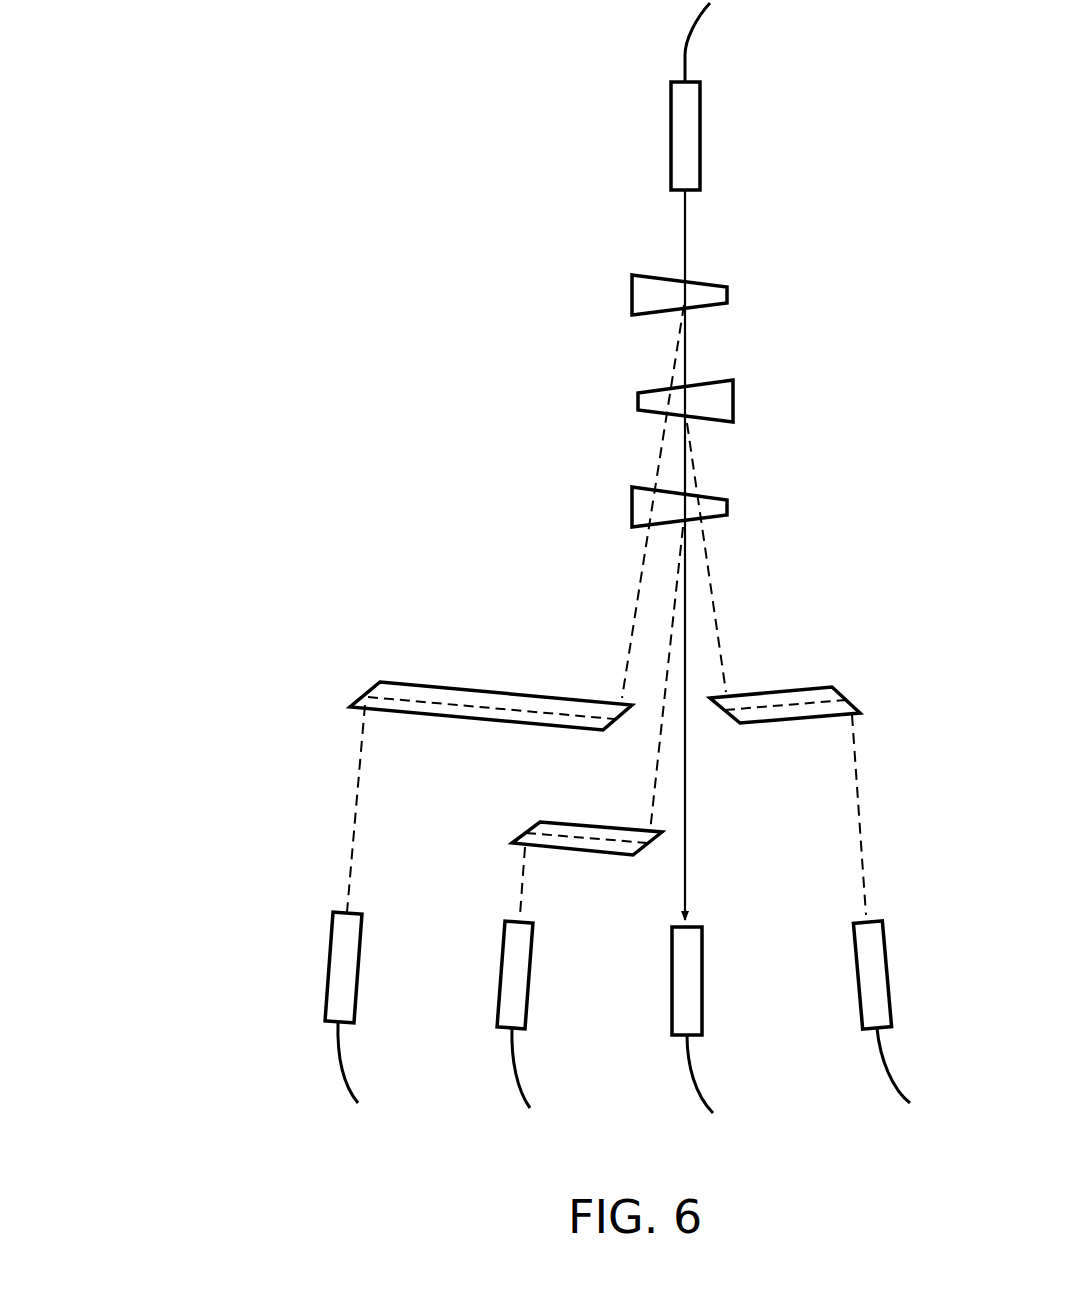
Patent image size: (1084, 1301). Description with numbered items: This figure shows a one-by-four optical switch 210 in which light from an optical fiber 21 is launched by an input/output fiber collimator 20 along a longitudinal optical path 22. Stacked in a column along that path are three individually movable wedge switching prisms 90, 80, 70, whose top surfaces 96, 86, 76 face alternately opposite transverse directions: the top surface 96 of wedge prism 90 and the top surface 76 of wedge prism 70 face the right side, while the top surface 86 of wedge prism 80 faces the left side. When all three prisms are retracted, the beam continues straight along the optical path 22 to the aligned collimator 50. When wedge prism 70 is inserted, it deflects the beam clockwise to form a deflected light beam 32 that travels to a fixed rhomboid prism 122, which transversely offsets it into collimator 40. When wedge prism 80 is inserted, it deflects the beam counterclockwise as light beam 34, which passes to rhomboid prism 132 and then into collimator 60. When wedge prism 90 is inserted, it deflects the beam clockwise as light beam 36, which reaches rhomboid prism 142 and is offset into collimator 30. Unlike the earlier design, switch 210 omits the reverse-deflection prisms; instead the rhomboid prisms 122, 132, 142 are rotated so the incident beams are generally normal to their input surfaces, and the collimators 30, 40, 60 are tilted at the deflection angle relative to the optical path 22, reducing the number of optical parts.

The optical switch 210 is at (150, 705).
The optical fiber 21 is at (686, 43).
The input/output fiber collimator 20 is at (671, 145).
The optical path 22 is at (687, 245).
The wedge switching prism 90 is at (687, 274).
The top surface of wedge prism 90 96 is at (727, 295).
The wedge switching prism 80 is at (693, 380).
The top surface of wedge prism 80 86 is at (638, 401).
The wedge switching prism 70 is at (687, 489).
The top surface of wedge prism 70 76 is at (727, 508).
The light beam 34 is at (711, 600).
The deflected light beam 32 is at (658, 743).
The light beam 36 is at (353, 807).
The rhomboid prism 142 is at (497, 688).
The rhomboid prism 132 is at (856, 708).
The rhomboid prism 122 is at (547, 850).
The output/input collimator 30 is at (331, 963).
The output/input collimator 40 is at (502, 970).
The output/input collimator 50 is at (672, 977).
The output/input collimator 60 is at (858, 972).